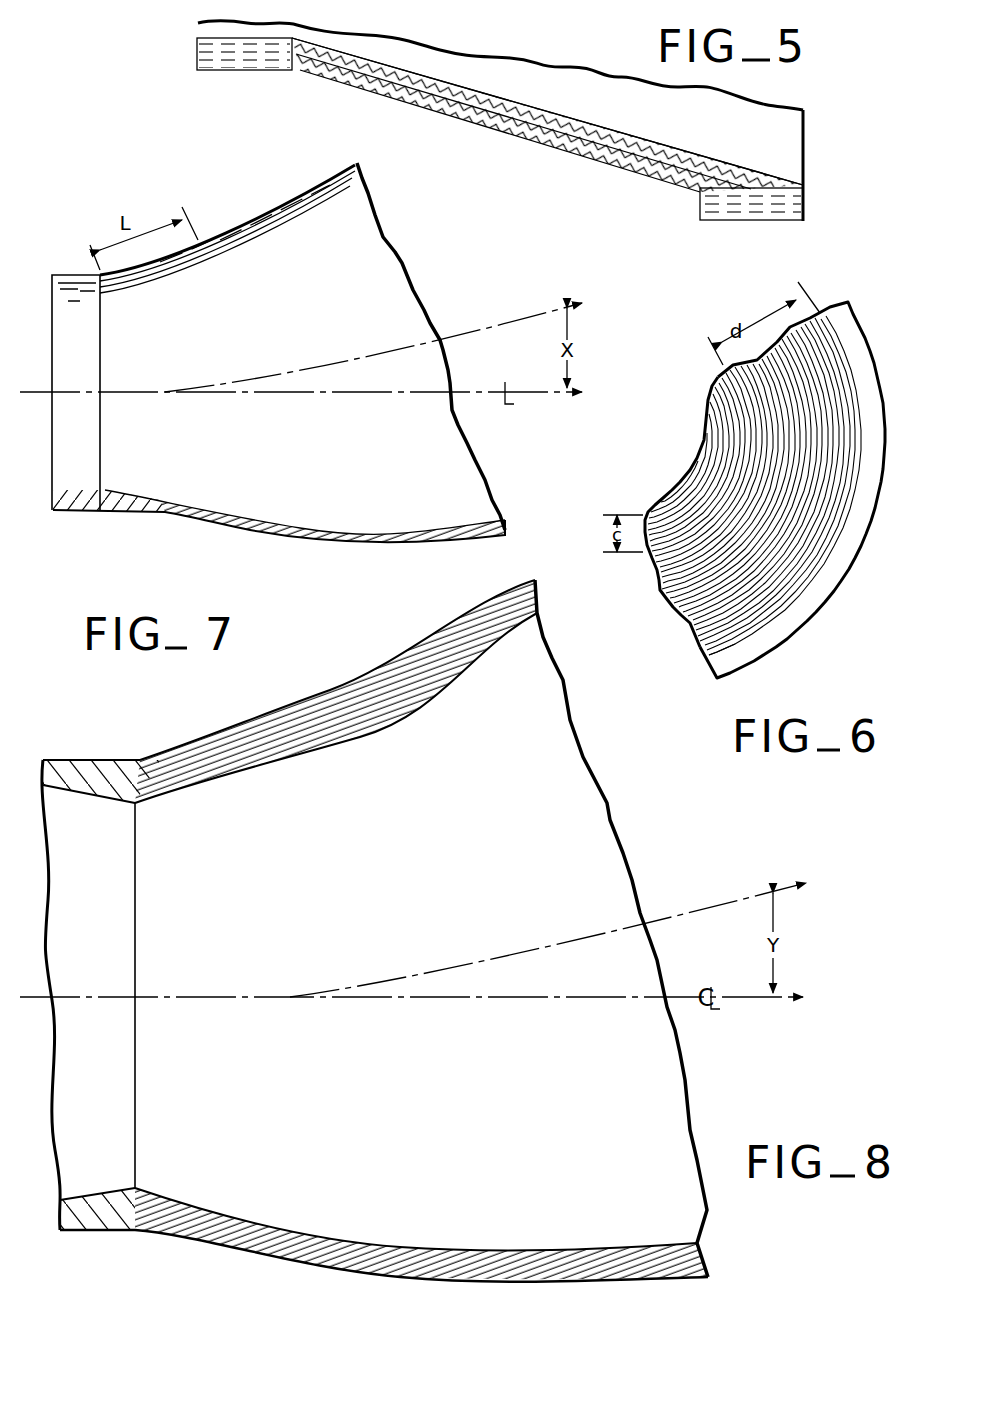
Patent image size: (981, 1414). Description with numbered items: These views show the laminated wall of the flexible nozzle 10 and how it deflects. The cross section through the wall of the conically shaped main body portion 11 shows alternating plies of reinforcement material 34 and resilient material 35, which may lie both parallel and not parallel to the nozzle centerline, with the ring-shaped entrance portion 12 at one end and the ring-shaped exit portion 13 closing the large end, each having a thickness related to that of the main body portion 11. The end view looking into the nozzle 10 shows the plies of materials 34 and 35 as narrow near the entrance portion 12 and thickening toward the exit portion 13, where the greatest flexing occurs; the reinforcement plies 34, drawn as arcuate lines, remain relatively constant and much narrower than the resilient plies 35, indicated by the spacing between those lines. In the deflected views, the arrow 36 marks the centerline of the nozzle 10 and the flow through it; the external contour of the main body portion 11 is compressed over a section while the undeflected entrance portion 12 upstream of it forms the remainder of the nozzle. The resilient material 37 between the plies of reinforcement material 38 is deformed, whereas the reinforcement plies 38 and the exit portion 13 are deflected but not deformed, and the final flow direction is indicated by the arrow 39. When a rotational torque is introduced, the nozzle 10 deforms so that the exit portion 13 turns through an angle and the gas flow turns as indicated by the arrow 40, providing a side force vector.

In FIG. 5, the nozzle 10 is at (652, 167).
In FIG. 7, the nozzle 10 is at (246, 203).
In FIG. 8, the nozzle 10 is at (485, 1288).
In FIG. 5, the main body portion 11 is at (380, 96).
In FIG. 7, the main body portion 11 is at (242, 532).
In FIG. 6, the main body portion 11 is at (668, 575).
In FIG. 8, the main body portion 11 is at (257, 1257).
In FIG. 5, the entrance portion 12 is at (225, 70).
In FIG. 7, the entrance portion 12 is at (68, 274).
In FIG. 6, the entrance portion 12 is at (676, 498).
In FIG. 8, the entrance portion 12 is at (82, 1233).
In FIG. 5, the exit portion 13 is at (758, 220).
In FIG. 6, the exit portion 13 is at (830, 577).
In FIG. 5, the reinforcement material 34 is at (253, 53).
In FIG. 6, the reinforcement material 34 is at (697, 647).
In FIG. 5, the resilient material 35 is at (587, 143).
In FIG. 6, the resilient material 35 is at (690, 623).
In FIG. 7, the arrow 36 is at (543, 397).
In FIG. 7, the resilient material 37 is at (292, 539).
In FIG. 8, the resilient material 37 is at (427, 1281).
In FIG. 7, the reinforcement material 38 is at (177, 528).
In FIG. 8, the reinforcement material 38 is at (297, 1268).
In FIG. 7, the arrow 39 is at (527, 316).
In FIG. 8, the arrow 40 is at (727, 902).